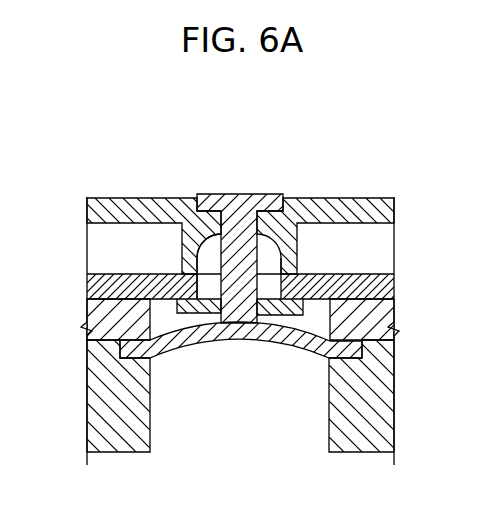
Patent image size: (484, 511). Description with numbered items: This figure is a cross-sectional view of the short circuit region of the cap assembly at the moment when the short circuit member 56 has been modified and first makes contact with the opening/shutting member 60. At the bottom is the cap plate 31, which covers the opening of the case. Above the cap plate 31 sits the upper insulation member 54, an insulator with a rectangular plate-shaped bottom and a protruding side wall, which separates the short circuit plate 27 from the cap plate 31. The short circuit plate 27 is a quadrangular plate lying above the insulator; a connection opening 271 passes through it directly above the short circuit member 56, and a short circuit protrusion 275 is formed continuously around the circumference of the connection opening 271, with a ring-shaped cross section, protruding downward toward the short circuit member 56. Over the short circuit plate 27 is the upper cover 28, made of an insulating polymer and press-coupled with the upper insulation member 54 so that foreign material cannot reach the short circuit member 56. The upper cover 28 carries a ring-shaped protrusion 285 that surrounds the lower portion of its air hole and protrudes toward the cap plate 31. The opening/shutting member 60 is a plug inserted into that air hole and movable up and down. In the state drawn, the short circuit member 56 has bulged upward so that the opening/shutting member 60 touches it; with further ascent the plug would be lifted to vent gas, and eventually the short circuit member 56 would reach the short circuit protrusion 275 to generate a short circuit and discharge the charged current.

The short circuit plate 27 is at (395, 285).
The upper cover 28 is at (356, 207).
The cap plate 31 is at (110, 383).
The upper insulation member 54 is at (108, 313).
The short circuit member 56 is at (235, 339).
The opening/shutting member 60 is at (242, 207).
The connection opening 271 is at (283, 287).
The short circuit protrusion 275 is at (168, 302).
The protrusion 285 is at (190, 244).